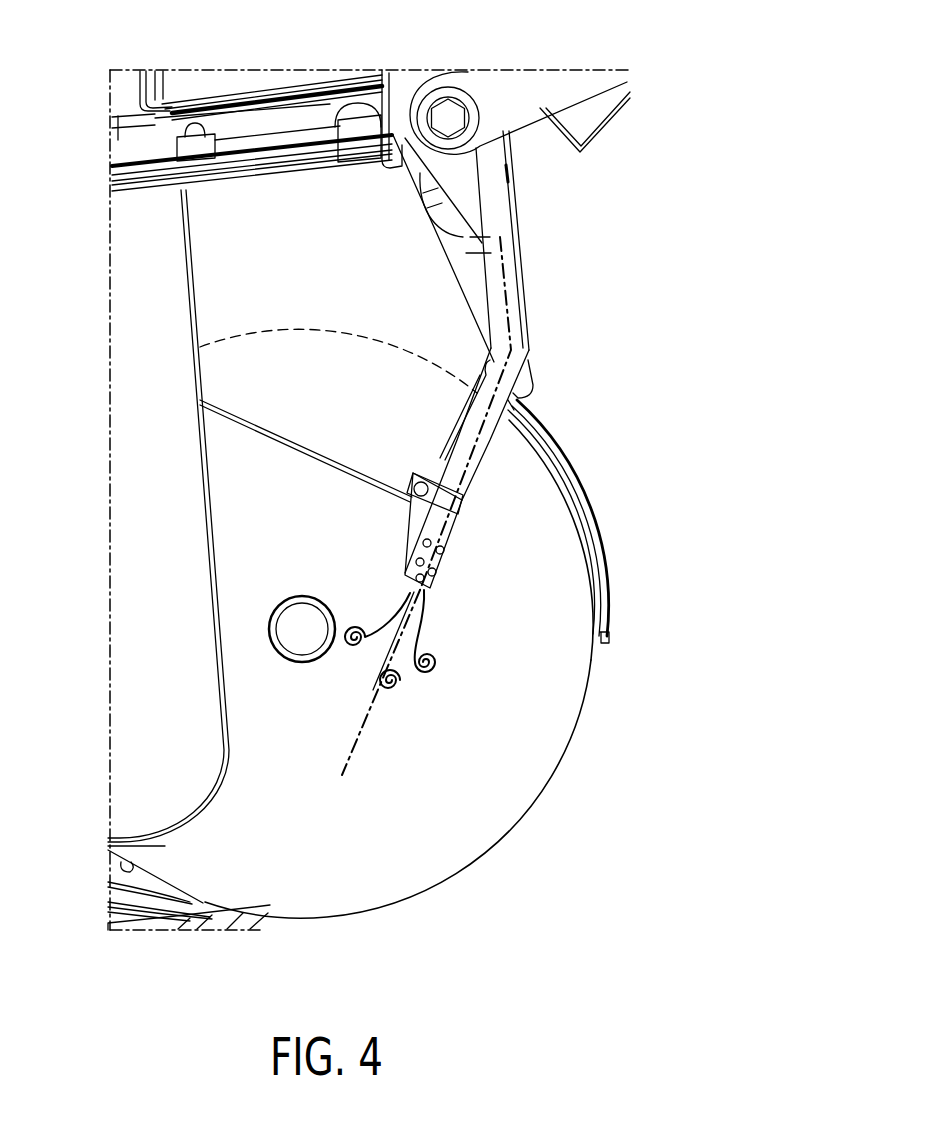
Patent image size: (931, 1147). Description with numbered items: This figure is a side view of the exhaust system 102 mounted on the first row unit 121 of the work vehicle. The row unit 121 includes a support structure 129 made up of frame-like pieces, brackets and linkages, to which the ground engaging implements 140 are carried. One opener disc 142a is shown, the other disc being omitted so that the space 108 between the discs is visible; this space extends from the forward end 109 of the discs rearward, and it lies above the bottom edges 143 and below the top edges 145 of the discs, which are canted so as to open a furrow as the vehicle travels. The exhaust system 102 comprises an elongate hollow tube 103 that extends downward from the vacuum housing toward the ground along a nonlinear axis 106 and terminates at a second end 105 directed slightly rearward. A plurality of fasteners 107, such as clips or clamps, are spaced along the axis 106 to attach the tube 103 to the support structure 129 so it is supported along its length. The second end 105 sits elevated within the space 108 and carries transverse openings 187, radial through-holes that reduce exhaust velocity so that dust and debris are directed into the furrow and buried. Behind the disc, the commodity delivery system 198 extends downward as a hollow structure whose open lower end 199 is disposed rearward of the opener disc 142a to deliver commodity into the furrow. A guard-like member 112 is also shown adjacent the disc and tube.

The first row unit 121 is at (170, 50).
The support structure 129 is at (430, 163).
The elongate tube 103 is at (500, 237).
The exhaust system 102 is at (520, 268).
The commodity delivery system 198 is at (200, 293).
The top edges 145 is at (347, 334).
The fasteners 107 is at (445, 492).
The space 108 is at (460, 548).
The guard assembly 112 is at (640, 565).
The transverse openings 187 is at (433, 572).
The forward end 109 is at (598, 604).
The second end 105 is at (418, 585).
The nonlinear axis 106 is at (355, 737).
The ground engaging implements 140 is at (580, 740).
The opener disc 142a is at (505, 802).
The bottom edges 143 is at (333, 917).
The lower end 199 is at (167, 843).